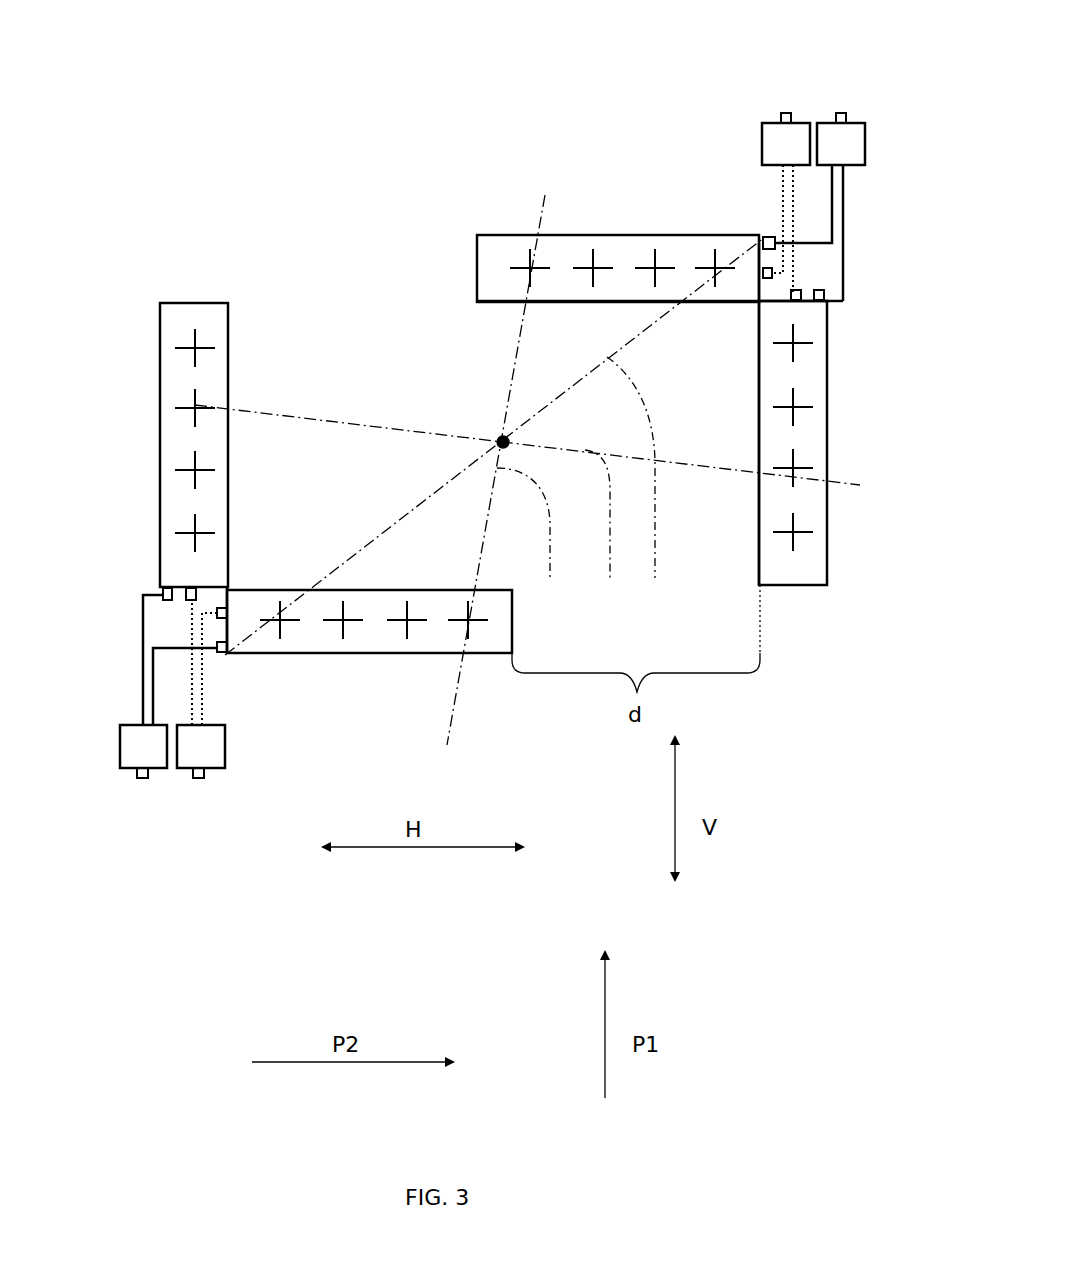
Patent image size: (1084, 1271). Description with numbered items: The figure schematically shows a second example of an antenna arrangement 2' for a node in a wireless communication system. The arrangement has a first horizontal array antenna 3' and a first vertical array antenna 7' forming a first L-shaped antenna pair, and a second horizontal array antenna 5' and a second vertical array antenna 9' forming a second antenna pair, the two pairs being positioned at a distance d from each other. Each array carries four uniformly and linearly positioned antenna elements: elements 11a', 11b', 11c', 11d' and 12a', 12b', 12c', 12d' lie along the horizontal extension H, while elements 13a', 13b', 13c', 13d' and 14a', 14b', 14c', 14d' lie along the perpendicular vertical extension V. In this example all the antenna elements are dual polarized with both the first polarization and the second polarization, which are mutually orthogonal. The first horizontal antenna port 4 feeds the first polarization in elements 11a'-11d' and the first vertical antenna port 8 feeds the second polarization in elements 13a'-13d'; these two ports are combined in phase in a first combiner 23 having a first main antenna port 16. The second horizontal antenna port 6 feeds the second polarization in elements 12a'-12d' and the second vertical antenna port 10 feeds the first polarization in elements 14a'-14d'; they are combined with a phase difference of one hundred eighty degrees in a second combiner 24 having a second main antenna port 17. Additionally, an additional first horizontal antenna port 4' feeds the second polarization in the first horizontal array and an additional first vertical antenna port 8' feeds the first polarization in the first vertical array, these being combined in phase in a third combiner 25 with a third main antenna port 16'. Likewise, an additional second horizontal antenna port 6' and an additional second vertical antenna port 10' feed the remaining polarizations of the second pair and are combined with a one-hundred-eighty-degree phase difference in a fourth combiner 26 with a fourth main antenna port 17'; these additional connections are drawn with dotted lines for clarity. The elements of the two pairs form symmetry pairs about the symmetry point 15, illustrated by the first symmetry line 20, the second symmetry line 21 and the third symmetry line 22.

The antenna arrangement 2' is at (493, 422).
The first horizontal array antenna 3' is at (369, 682).
The first horizontal antenna port 4 is at (225, 677).
The additional first horizontal antenna port 4' is at (252, 578).
The second horizontal array antenna 5' is at (578, 258).
The second horizontal antenna port 6 is at (728, 183).
The additional second horizontal antenna port 6' is at (734, 306).
The first vertical array antenna 7' is at (155, 431).
The first vertical antenna port 8 is at (144, 581).
The additional first vertical antenna port 8' is at (225, 551).
The second vertical array antenna 9' is at (793, 498).
The second vertical antenna port 10 is at (859, 303).
The additional second vertical antenna port 10' is at (759, 337).
The first antenna element 11a' is at (285, 653).
The second antenna element 11b' is at (344, 653).
The third antenna element 11c' is at (406, 653).
The fourth antenna element 11d' is at (478, 653).
The first antenna element 12a' is at (721, 236).
The second antenna element 12b' is at (654, 236).
The third antenna element 12c' is at (589, 236).
The fourth antenna element 12d' is at (517, 239).
The first antenna element 13a' is at (150, 533).
The second antenna element 13b' is at (150, 470).
The third antenna element 13c' is at (150, 408).
The fourth antenna element 13d' is at (150, 348).
The first antenna element 14a' is at (849, 350).
The second antenna element 14b' is at (849, 415).
The third antenna element 14c' is at (848, 477).
The fourth antenna element 14d' is at (849, 541).
The symmetry point 15 is at (500, 436).
The first main antenna port 16 is at (151, 830).
The third main antenna port 16' is at (212, 828).
The second main antenna port 17 is at (841, 97).
The fourth main antenna port 17' is at (786, 97).
The first symmetry line 20 is at (641, 490).
The second symmetry line 21 is at (532, 545).
The third symmetry line 22 is at (606, 536).
The first combiner 23 is at (127, 762).
The second combiner 24 is at (850, 148).
The third combiner 25 is at (225, 750).
The fourth combiner 26 is at (778, 148).